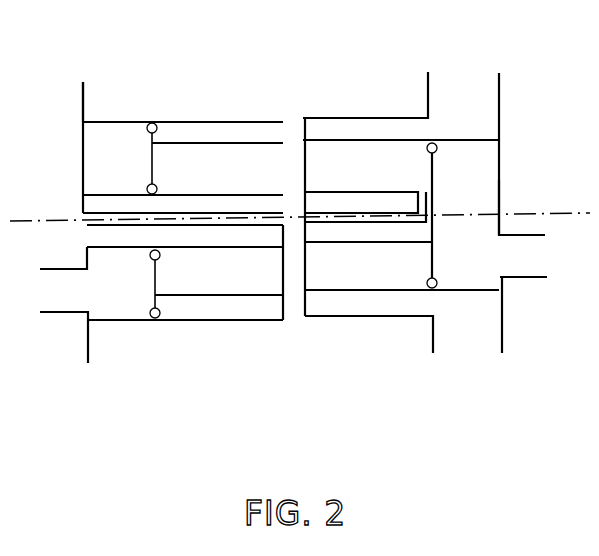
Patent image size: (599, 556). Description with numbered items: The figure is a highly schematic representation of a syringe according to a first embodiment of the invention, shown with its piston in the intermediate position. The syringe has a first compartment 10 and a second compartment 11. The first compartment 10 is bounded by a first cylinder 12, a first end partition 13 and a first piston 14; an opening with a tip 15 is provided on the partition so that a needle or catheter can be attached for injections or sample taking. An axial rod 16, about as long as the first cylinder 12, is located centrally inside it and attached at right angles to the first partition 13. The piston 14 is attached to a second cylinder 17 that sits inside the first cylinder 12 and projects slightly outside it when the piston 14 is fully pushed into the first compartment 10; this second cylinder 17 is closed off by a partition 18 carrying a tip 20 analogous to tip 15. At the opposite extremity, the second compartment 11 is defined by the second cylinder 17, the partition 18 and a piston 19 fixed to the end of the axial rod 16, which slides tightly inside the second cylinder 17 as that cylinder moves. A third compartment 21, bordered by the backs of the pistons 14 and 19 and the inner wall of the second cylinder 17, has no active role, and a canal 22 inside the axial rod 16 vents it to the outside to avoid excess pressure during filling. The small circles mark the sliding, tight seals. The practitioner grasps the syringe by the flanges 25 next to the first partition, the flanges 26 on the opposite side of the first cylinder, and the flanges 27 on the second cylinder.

The first compartment 10 is at (114, 137).
The second compartment 11 is at (467, 167).
The first cylinder 12 is at (189, 121).
The first end partition 13 is at (83, 164).
The first piston 14 is at (155, 277).
The tip 15 is at (60, 313).
The axial rod 16 is at (328, 198).
The second cylinder 17 is at (378, 139).
The partition 18 is at (499, 195).
The piston 19 is at (428, 263).
The tip 20 is at (523, 278).
The third compartment 21 is at (227, 165).
The canal 22 is at (340, 220).
The flanges 25 is at (83, 93).
The flanges 26 is at (428, 92).
The flanges 27 is at (499, 92).